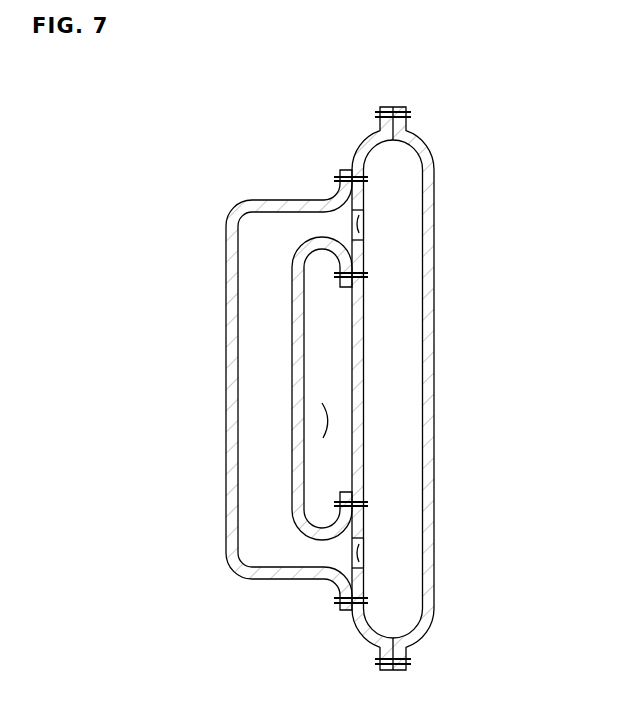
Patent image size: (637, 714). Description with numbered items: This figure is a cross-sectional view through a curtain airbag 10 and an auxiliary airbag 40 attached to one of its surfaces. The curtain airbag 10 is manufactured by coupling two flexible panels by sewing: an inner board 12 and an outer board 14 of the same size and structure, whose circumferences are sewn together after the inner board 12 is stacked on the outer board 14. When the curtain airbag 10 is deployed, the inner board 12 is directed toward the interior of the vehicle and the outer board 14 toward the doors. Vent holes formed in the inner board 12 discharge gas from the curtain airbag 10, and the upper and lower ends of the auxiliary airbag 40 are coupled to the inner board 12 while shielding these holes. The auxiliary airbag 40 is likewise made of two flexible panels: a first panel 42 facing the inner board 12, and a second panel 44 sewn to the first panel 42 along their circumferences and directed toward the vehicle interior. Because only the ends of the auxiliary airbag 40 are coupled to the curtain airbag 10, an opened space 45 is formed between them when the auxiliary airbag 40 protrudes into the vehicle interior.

The curtain airbag 10 is at (464, 388).
The inner board 12 is at (359, 352).
The outer board 14 is at (428, 407).
The auxiliary airbag 40 is at (218, 390).
The first panel 42 is at (300, 327).
The second panel 44 is at (234, 358).
The opened space 45 is at (324, 418).